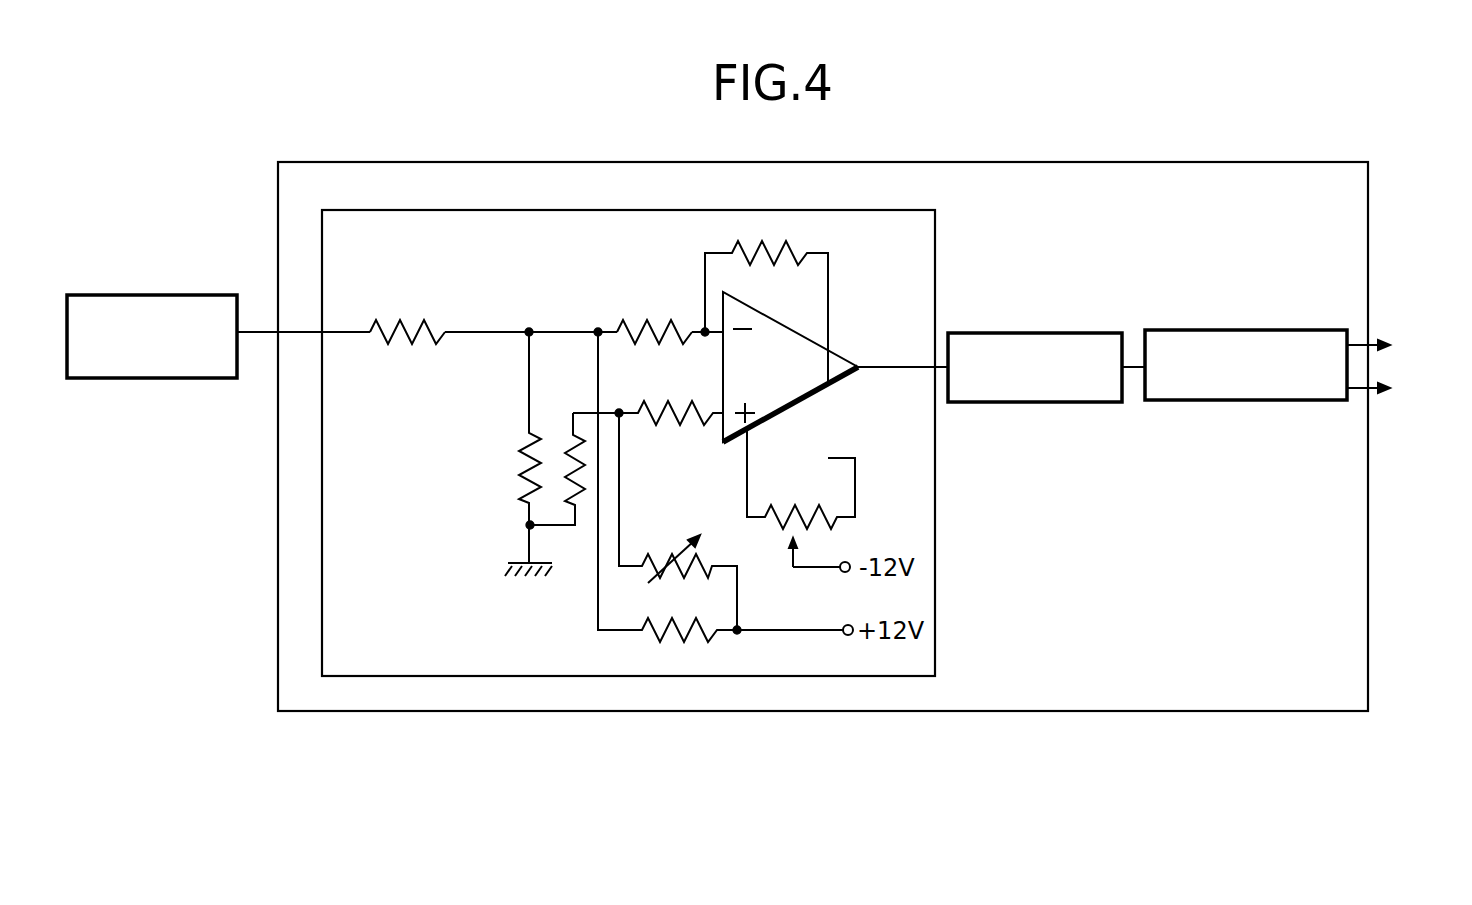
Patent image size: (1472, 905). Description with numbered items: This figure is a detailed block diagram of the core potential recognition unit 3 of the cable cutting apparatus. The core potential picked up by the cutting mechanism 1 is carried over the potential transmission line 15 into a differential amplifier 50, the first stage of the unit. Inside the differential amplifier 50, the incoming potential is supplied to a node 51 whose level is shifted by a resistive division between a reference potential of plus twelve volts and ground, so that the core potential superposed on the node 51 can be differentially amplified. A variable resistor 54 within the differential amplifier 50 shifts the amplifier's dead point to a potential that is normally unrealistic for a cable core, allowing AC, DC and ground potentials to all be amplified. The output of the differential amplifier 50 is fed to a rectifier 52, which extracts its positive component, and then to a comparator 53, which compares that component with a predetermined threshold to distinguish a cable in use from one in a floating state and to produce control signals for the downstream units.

The cutting mechanism 1 is at (123, 294).
The potential transmission line 15 is at (258, 332).
The node 51 is at (529, 332).
The rectifier 52 is at (1017, 333).
The comparator 53 is at (1200, 330).
The variable resistor 54 is at (657, 552).
The differential amplifier 50 is at (437, 677).
The core potential recognition unit 3 is at (950, 711).